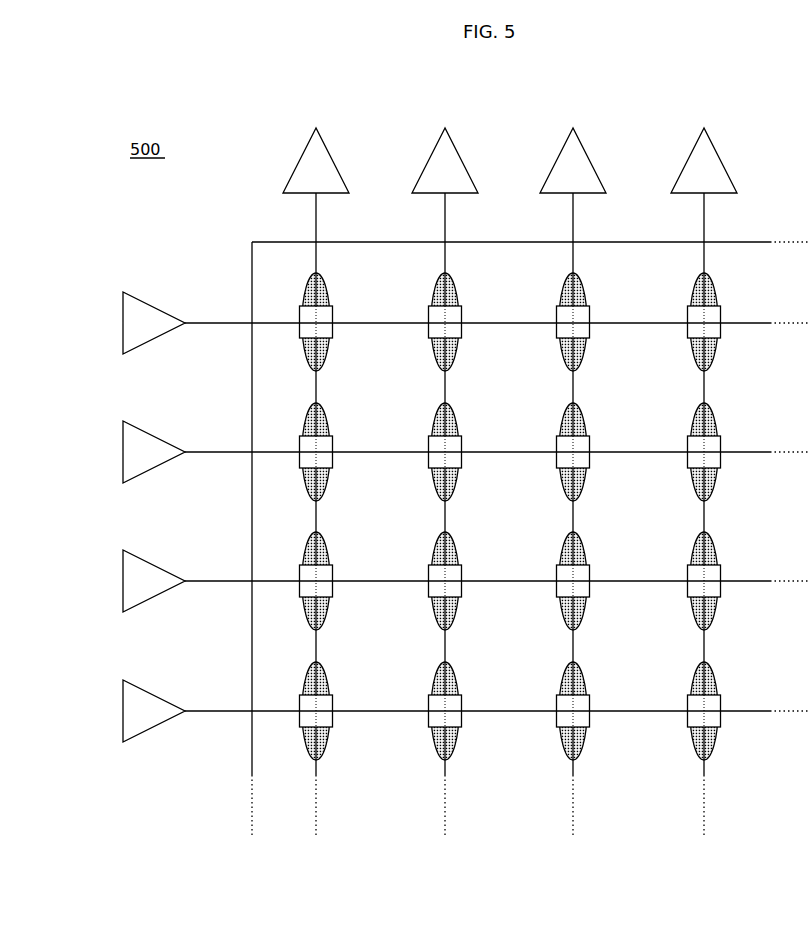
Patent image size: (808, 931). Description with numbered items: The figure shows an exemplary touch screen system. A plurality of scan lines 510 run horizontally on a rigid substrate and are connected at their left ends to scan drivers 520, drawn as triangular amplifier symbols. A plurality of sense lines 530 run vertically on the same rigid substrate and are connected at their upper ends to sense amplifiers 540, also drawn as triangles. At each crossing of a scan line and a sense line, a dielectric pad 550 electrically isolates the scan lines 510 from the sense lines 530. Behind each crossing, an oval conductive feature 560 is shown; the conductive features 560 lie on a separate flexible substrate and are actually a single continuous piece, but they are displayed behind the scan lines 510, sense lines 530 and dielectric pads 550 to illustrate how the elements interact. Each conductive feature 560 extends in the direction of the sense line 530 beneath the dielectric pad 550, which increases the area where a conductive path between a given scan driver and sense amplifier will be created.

The scan lines 510 is at (205, 324).
The scan drivers 520 is at (170, 469).
The sense lines 530 is at (445, 241).
The sense amplifiers 540 is at (549, 172).
The dielectric pads 550 is at (333, 314).
The conductive features 560 is at (458, 352).